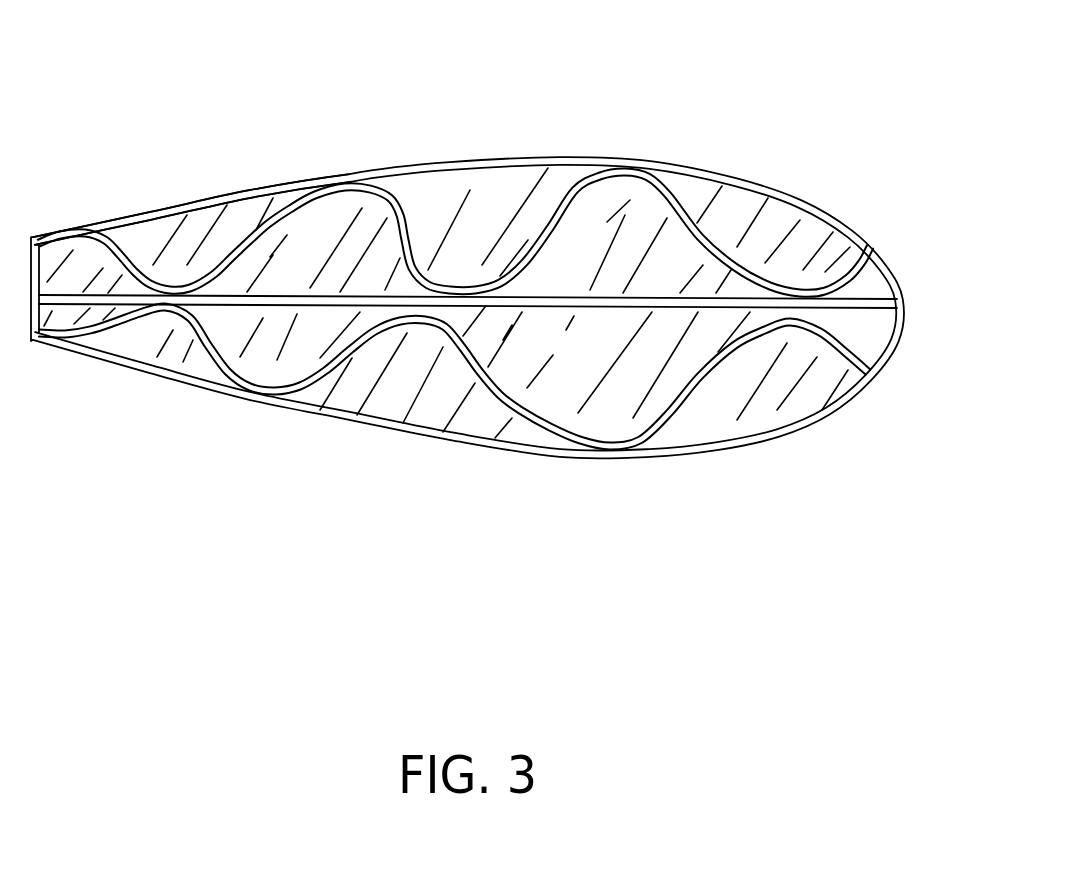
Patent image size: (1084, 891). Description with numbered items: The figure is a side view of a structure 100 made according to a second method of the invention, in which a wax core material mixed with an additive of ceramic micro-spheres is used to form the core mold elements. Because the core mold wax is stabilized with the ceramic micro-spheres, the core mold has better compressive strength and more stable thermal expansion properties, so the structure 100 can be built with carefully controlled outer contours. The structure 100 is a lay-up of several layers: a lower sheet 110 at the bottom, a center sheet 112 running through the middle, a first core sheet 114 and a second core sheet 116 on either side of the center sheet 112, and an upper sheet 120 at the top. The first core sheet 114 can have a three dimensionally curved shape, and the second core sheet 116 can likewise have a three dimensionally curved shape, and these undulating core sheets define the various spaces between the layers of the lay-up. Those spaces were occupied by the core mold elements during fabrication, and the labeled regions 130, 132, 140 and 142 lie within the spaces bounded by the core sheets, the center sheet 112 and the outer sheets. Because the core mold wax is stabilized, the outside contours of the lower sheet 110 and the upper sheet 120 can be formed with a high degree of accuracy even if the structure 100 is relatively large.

The structure 100 is at (470, 284).
The lower sheet 110 is at (260, 400).
The center sheet 112 is at (533, 312).
The first core sheet 114 is at (500, 400).
The second core sheet 116 is at (410, 217).
The upper sheet 120 is at (184, 197).
The lower right cavity 130 is at (762, 400).
The lower middle cavity 132 is at (623, 390).
The upper cavity 140 is at (647, 180).
The upper right cavity 142 is at (775, 222).